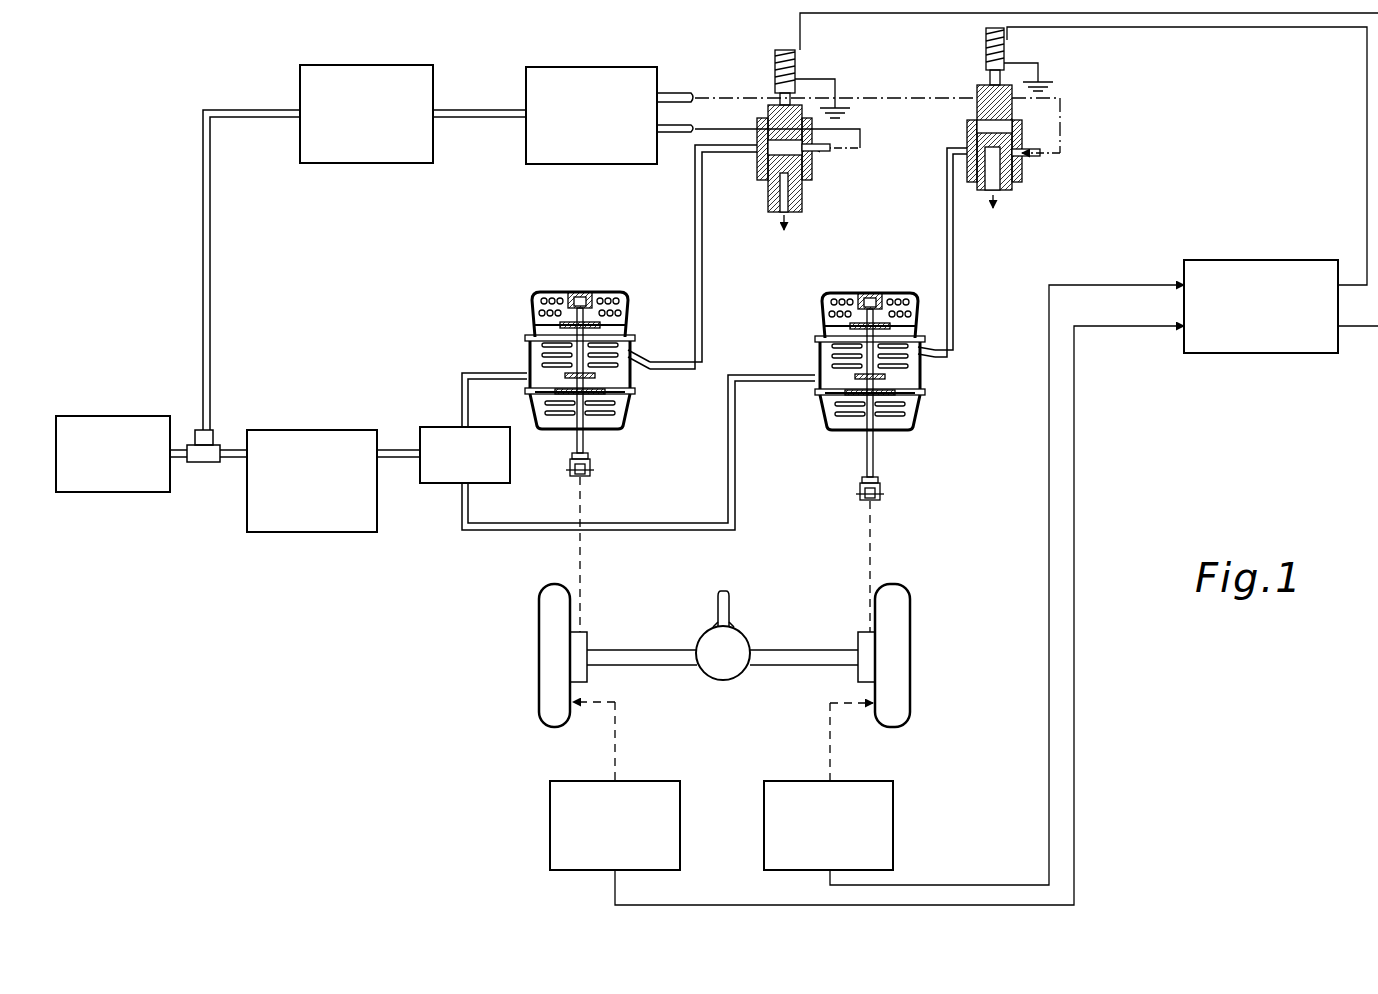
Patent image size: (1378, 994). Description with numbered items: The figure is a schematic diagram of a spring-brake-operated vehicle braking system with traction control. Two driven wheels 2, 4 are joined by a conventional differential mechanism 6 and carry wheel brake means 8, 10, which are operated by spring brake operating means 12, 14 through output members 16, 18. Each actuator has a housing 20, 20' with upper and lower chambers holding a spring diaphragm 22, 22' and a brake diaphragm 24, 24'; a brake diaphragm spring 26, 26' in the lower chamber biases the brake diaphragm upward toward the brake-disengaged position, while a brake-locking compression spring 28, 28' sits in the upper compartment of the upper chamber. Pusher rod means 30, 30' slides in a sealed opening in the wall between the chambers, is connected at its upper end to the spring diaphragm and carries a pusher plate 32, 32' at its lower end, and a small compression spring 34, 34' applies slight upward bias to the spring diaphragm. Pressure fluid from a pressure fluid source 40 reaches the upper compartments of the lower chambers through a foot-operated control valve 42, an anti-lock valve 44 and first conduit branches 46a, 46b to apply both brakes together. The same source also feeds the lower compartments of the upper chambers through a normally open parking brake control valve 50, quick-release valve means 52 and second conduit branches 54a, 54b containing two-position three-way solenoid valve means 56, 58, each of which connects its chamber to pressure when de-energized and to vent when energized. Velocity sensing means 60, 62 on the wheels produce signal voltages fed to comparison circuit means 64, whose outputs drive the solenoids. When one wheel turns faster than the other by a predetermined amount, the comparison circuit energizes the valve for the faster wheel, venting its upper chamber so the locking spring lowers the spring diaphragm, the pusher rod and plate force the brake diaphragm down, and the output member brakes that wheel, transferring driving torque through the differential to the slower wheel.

The driven wheel 2 is at (548, 627).
The driven wheel 4 is at (903, 633).
The differential mechanism 6 is at (737, 643).
The wheel brake means 8 is at (588, 633).
The wheel brake means 10 is at (860, 633).
The spring brake operating means 12 is at (574, 336).
The spring brake operating means 14 is at (870, 337).
The output member 16 is at (605, 470).
The output member 18 is at (900, 470).
The housing 20 is at (601, 284).
The housing 20' is at (892, 285).
The spring diaphragm 22 is at (556, 318).
The spring diaphragm 22' is at (840, 336).
The brake diaphragm 24 is at (557, 402).
The brake diaphragm 24' is at (845, 404).
The brake diaphragm spring 26 is at (610, 405).
The brake diaphragm spring 26' is at (901, 408).
The brake-locking compression spring 28 is at (605, 305).
The locking spring 28' is at (843, 308).
The pusher rod means 30 is at (652, 352).
The pusher rod means 30' is at (926, 367).
The pusher plate 32 is at (632, 388).
The pusher plate 32' is at (842, 416).
The small compression spring 34 is at (559, 354).
The small compression spring 34' is at (850, 360).
The pressure fluid source 40 is at (108, 493).
The foot-operated control valve 42 is at (303, 533).
The anti-lock valve 44 is at (510, 470).
The first conduit branch 46a is at (462, 412).
The first conduit branch 46b is at (525, 535).
The parking brake control valve 50 is at (364, 65).
The quick-release valve means 52 is at (589, 67).
The second conduit branch 54a is at (675, 133).
The second conduit branch 54b is at (685, 93).
The solenoid valve means 56 is at (813, 173).
The solenoid valve means 58 is at (1024, 176).
The velocity sensing means 60 is at (552, 832).
The velocity sensing means 62 is at (893, 822).
The comparison circuit means 64 is at (1262, 250).